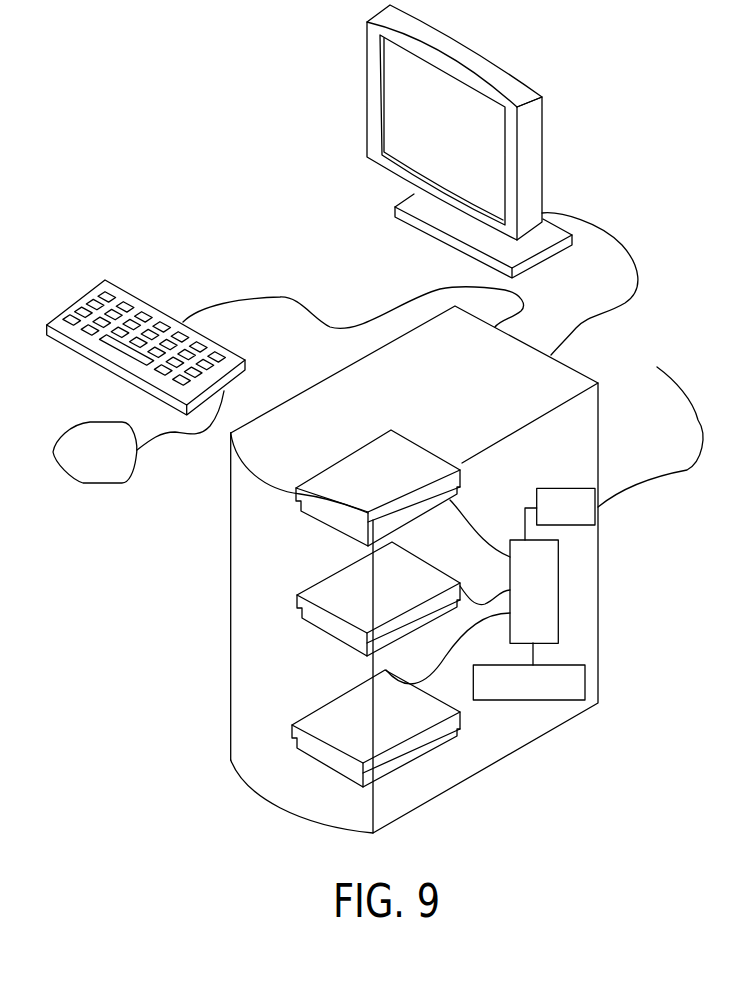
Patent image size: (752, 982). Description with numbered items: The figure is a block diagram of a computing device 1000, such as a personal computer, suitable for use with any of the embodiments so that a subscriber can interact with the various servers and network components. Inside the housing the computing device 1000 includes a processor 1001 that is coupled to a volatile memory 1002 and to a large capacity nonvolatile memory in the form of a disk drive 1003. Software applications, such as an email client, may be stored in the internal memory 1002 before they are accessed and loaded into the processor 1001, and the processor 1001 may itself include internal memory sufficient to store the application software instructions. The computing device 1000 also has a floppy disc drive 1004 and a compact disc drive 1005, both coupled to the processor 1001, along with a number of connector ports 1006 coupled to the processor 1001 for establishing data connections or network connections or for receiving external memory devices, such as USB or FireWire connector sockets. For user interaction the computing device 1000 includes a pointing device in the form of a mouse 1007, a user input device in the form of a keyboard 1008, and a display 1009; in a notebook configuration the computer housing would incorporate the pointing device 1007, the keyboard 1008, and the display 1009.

The computing device 1000 is at (598, 430).
The processor 1001 is at (552, 604).
The volatile memory 1002 is at (552, 694).
The disk drive 1003 is at (473, 729).
The floppy disc drive 1004 is at (463, 478).
The compact disc (CD) drive 1005 is at (335, 637).
The connector ports 1006 is at (587, 521).
The mouse 1007 is at (101, 484).
The keyboard 1008 is at (247, 370).
The display 1009 is at (542, 152).